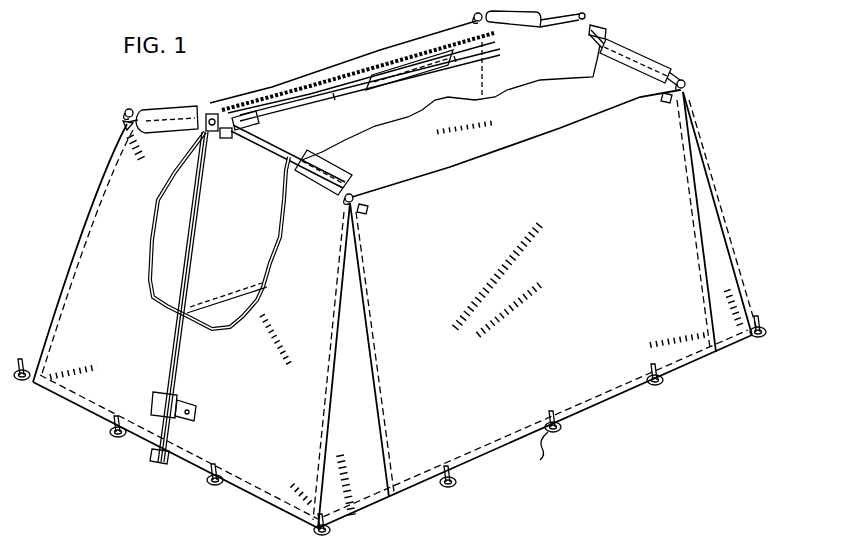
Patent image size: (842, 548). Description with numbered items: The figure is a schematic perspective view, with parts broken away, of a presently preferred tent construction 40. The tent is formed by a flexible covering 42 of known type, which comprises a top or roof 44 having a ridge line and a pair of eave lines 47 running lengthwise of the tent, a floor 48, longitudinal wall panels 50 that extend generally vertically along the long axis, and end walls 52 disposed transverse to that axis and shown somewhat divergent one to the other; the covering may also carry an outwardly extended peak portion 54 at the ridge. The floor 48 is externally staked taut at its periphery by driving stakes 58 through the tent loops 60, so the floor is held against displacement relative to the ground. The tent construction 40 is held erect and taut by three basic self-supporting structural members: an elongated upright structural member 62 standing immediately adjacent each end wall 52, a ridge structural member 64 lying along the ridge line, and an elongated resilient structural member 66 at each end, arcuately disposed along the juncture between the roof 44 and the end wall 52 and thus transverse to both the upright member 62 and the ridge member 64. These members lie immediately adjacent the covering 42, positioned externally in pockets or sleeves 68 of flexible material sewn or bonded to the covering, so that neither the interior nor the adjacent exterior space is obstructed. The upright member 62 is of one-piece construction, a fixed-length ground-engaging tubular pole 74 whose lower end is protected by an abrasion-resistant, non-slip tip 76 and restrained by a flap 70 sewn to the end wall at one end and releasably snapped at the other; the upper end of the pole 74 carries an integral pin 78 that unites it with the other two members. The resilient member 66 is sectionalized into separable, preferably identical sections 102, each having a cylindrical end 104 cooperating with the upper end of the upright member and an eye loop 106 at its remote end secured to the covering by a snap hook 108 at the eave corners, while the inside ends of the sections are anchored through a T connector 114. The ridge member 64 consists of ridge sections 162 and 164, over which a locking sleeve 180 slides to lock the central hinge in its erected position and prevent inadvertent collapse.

The tent construction 40 is at (429, 70).
The flexible covering 42 is at (88, 230).
The roof 44 is at (273, 84).
The eave lines 47 is at (233, 73).
The floor 48 is at (255, 331).
The longitudinal wall panels 50 is at (256, 246).
The end walls 52 is at (526, 84).
The peak portion 54 is at (392, 439).
The stakes 58 is at (458, 474).
The tent loops 60 is at (545, 448).
The upright structural member 62 is at (190, 288).
The ridge structural member 64 is at (360, 97).
The resilient structural member 66 is at (262, 148).
The sleeves 68 is at (160, 108).
The flap 70 is at (155, 393).
The tubular pole 74 is at (173, 335).
The tip 76 is at (162, 466).
The pin 78 is at (208, 114).
The sections 102 is at (203, 127).
The cylindrical end 104 is at (228, 140).
The eye loop 106 is at (122, 123).
The snap hook 108 is at (124, 110).
The T connector 114 is at (268, 122).
The ridge section 162 is at (334, 100).
The ridge section 164 is at (455, 60).
The locking sleeve 180 is at (407, 73).